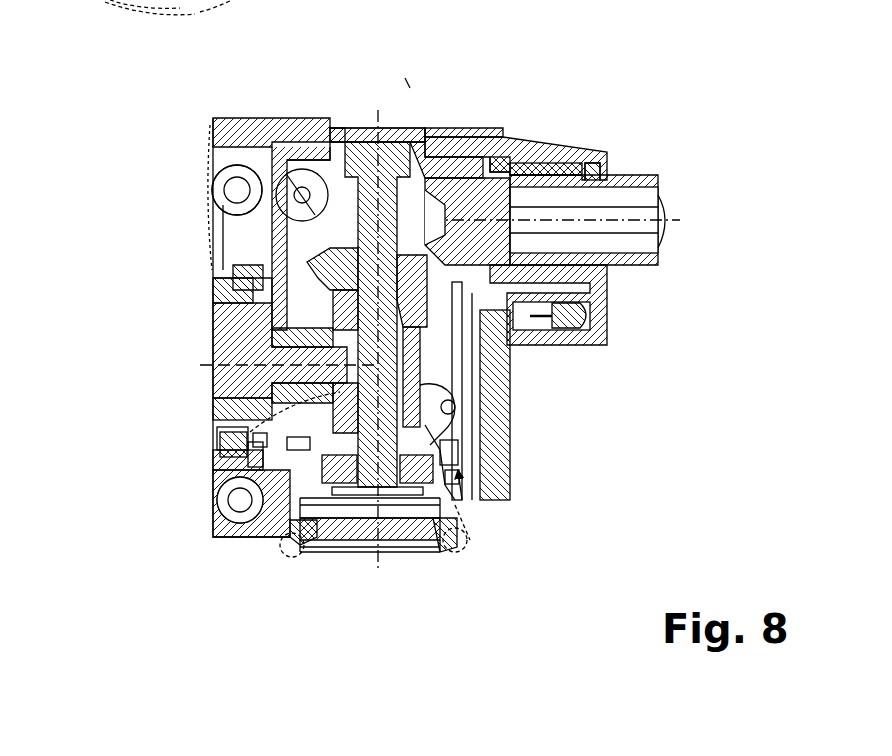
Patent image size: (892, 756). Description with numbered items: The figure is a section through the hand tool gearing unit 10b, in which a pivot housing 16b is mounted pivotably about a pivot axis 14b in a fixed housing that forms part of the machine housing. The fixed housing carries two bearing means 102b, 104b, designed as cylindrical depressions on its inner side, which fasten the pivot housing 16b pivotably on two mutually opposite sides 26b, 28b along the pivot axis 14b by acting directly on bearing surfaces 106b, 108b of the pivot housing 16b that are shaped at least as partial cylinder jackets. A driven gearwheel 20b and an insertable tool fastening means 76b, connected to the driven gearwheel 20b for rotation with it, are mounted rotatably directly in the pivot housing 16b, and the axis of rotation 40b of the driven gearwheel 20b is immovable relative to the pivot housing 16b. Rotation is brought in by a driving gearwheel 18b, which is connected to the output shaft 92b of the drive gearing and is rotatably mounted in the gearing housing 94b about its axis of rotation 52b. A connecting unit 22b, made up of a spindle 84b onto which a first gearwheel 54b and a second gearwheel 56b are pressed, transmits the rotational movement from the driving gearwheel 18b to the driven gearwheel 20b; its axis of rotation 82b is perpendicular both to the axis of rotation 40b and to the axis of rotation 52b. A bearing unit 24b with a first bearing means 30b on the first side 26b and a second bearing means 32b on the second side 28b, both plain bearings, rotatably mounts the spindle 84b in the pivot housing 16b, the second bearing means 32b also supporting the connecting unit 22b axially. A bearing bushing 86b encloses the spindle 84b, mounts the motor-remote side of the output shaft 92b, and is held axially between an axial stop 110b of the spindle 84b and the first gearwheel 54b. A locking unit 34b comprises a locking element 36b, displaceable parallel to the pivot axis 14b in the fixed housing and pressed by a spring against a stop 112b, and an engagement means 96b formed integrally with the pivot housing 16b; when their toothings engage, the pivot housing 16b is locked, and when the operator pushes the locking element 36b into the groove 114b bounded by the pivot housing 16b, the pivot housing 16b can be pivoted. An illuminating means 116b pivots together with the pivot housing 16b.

The hand tool gearing unit 10b is at (535, 82).
The pivot axis 14b is at (357, 120).
The axis of rotation of the connecting unit 82b is at (373, 83).
The bearing means 102b is at (300, 118).
The connecting unit 22b is at (350, 128).
The first side 26b is at (410, 75).
The bearing surface 106b is at (440, 118).
The driven gearwheel 20b is at (480, 118).
The pivot housing 16b is at (560, 148).
The insertable tool fastening means 76b is at (632, 172).
The axis of rotation of the driven gearwheel 40b is at (680, 210).
The bearing unit 24b is at (330, 147).
The first bearing means 30b is at (188, 176).
The second bearing means 32b is at (209, 503).
The gearing housing 94b is at (225, 285).
The axis of rotation of the driving gearwheel 52b is at (210, 350).
The output shaft 92b is at (230, 408).
The driving gearwheel 18b is at (240, 432).
The second gearwheel 56b is at (450, 300).
The first gearwheel 54b is at (463, 315).
The bearing bushing 86b is at (445, 410).
The illuminating means 116b is at (590, 330).
The bearing means 104b is at (440, 445).
The bearing surface 108b is at (475, 470).
The groove 114b is at (490, 500).
The stop 112b is at (475, 520).
The engagement means 96b is at (270, 540).
The axial stop 110b is at (440, 530).
The locking element 36b is at (312, 548).
The spindle 84b is at (370, 540).
The second side 28b is at (412, 570).
The locking unit 34b is at (320, 575).